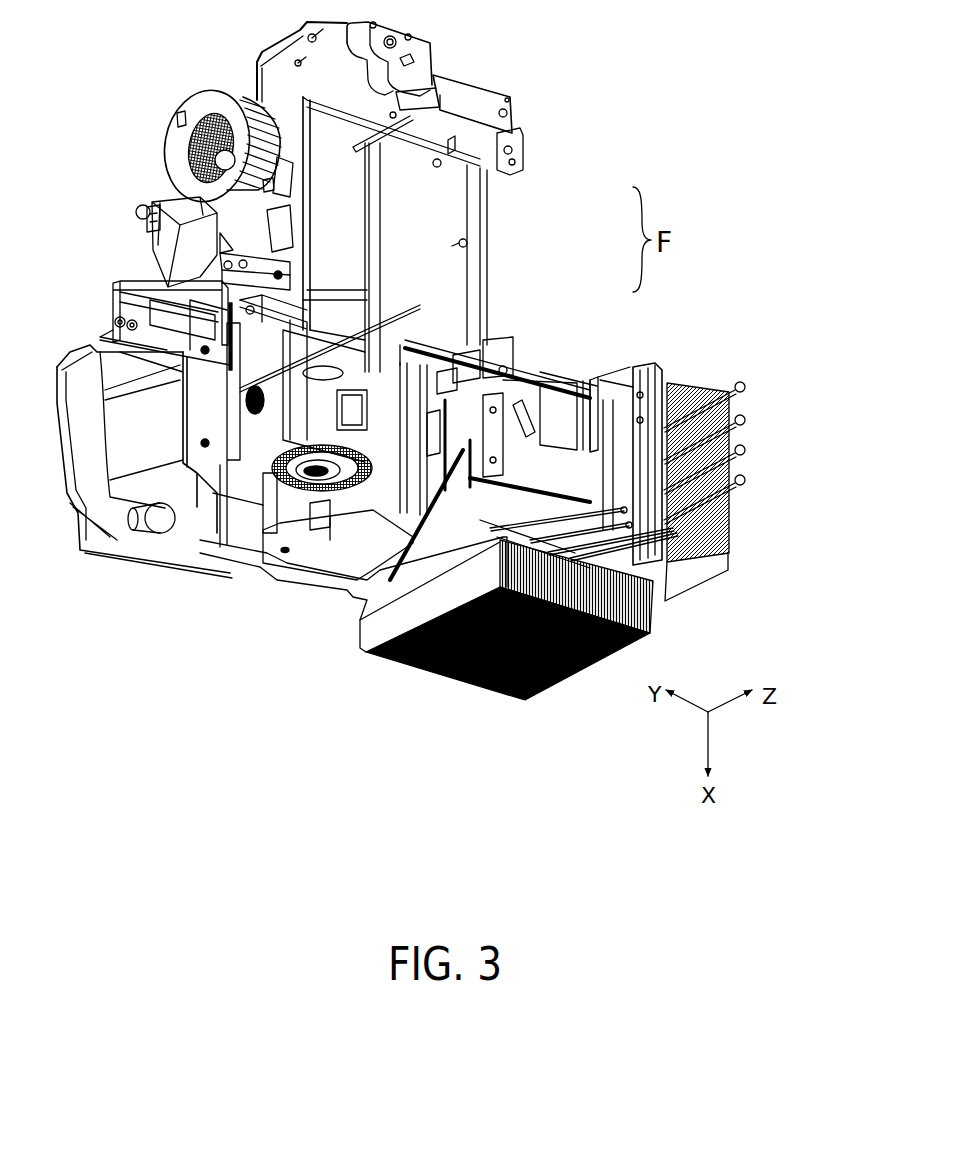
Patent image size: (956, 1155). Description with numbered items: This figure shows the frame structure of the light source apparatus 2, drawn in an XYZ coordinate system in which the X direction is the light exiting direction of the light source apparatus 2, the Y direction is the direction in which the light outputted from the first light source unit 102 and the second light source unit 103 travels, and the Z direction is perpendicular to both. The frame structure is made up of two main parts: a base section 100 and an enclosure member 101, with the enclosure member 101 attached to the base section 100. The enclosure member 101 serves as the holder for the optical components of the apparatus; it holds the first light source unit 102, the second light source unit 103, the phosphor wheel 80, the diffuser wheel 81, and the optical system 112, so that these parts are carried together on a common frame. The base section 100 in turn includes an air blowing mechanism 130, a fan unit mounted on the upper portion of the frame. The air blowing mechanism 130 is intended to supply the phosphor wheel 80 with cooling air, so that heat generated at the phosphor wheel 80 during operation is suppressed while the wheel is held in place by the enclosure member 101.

The light source apparatus 2 is at (570, 97).
The air blowing mechanism 130 is at (155, 125).
The base section 100 is at (497, 287).
The enclosure member 101 is at (533, 370).
The optical system 112 is at (598, 380).
The second light source unit 103 is at (740, 517).
The first light source unit 102 is at (467, 698).
The phosphor wheel 80 is at (292, 470).
The diffuser wheel 81 is at (262, 458).